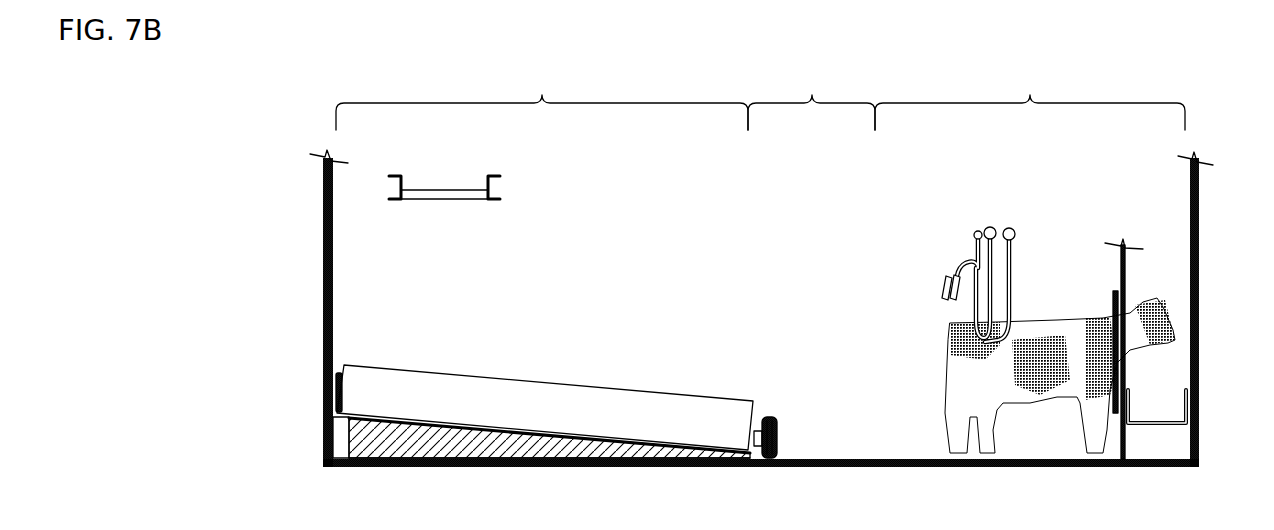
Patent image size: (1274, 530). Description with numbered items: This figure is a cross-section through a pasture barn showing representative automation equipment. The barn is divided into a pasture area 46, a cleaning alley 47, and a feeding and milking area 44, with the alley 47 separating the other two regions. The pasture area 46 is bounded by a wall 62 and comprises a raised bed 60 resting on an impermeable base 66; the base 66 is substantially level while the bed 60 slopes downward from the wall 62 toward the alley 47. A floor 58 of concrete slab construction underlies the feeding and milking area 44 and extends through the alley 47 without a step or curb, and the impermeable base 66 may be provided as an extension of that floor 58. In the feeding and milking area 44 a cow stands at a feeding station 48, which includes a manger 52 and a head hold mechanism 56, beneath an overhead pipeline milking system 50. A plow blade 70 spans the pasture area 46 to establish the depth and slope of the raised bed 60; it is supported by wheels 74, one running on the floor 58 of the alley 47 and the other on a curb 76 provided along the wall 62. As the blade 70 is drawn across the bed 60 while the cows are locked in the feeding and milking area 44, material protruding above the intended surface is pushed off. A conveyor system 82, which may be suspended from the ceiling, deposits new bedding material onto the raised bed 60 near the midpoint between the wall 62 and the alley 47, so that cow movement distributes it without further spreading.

The feeding and milking area 44 is at (1030, 97).
The pasture area 46 is at (542, 97).
The cleaning alley 47 is at (811, 97).
The feeding station 48 is at (1147, 211).
The overhead pipeline milking system 50 is at (970, 221).
The manger 52 is at (1165, 402).
The head hold mechanism 56 is at (1113, 300).
The floor 58 is at (873, 459).
The raised bed 60 is at (398, 454).
The wall 62 is at (328, 228).
The impermeable base 66 is at (513, 463).
The plow blade 70 is at (620, 403).
The wheels 74 is at (336, 385).
The curb 76 is at (333, 431).
The conveyor system 82 is at (486, 164).